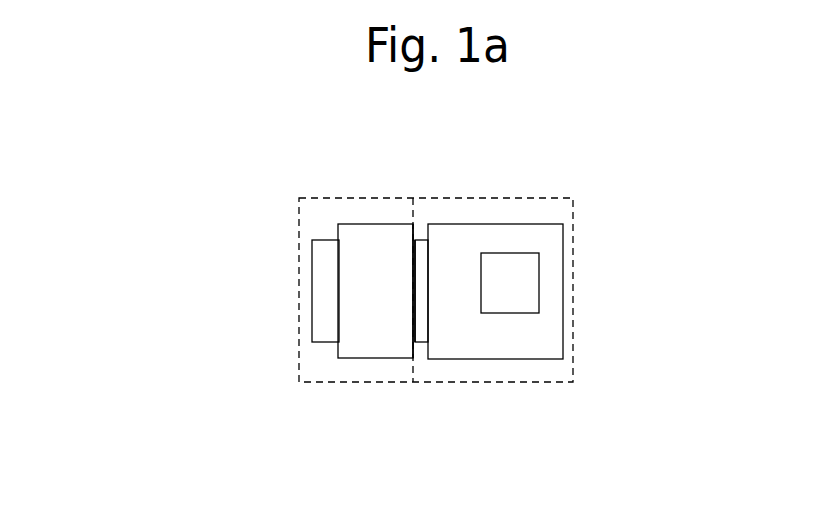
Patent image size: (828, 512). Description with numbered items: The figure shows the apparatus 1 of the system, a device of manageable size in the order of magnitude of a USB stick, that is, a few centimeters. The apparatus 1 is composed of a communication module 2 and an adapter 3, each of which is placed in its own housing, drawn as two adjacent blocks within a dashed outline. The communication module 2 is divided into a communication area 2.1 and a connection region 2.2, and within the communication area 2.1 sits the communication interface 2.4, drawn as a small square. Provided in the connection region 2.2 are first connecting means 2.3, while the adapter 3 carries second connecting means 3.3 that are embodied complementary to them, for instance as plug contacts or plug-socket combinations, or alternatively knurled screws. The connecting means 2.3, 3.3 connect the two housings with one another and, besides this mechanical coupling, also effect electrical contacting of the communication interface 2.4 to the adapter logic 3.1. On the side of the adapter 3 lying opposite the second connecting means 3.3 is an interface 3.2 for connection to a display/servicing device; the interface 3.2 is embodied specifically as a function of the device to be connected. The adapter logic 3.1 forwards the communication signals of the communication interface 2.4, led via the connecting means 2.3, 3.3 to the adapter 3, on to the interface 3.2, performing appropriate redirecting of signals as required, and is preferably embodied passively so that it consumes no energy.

The apparatus 1 is at (183, 227).
The communication module 2 is at (517, 184).
The adapter 3 is at (299, 182).
The communication area 2.1 is at (544, 343).
The connection region 2.2 is at (426, 335).
The first connecting means 2.3 is at (418, 273).
The communication interface 2.4 is at (525, 283).
The adapter logic 3.1 is at (377, 338).
The interface 3.2 is at (322, 323).
The second connecting means 3.3 is at (408, 272).